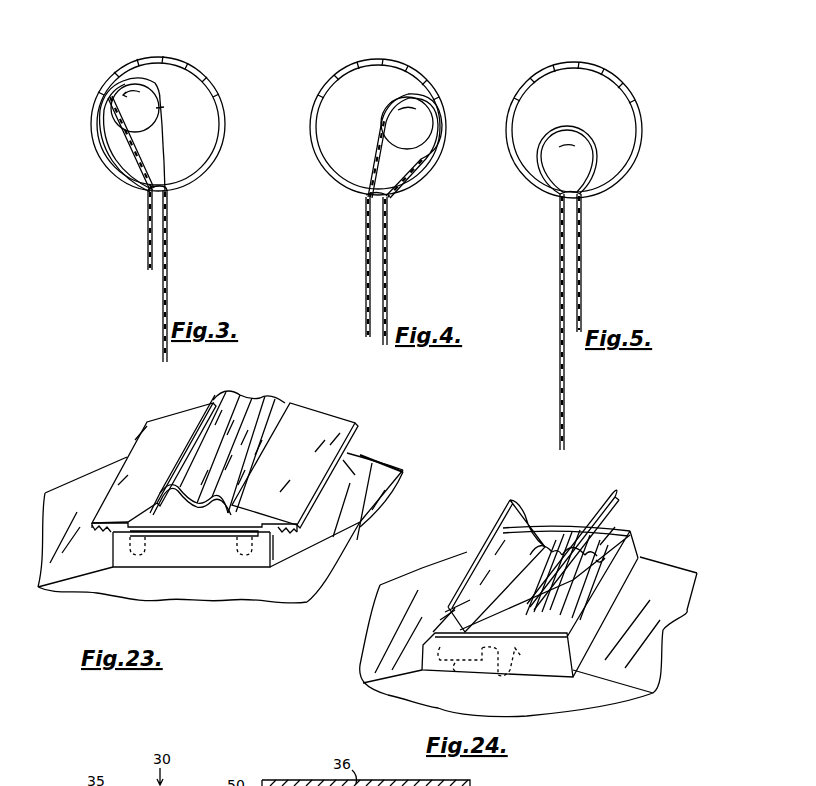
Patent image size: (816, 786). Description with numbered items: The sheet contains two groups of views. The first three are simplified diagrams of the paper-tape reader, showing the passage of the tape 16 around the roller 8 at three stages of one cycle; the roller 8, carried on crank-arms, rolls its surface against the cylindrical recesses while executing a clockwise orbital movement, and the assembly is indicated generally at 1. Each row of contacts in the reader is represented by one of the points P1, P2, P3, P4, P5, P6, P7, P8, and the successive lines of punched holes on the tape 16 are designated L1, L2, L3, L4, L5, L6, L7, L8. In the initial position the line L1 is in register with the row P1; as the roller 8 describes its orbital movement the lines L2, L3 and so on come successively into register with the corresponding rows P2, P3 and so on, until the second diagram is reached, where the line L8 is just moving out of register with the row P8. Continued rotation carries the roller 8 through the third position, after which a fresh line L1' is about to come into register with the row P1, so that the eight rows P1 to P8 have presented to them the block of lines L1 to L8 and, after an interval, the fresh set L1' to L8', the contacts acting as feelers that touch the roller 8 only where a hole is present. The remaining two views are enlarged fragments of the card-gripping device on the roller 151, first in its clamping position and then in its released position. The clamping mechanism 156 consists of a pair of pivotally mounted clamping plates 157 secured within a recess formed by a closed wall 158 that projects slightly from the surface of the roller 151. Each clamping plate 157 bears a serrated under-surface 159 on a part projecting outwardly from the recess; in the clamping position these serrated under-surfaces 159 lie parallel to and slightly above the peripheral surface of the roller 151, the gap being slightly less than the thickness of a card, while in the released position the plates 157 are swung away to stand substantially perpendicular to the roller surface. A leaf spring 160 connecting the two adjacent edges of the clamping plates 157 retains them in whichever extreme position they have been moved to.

In FIG. 3, the knot / stitch formation 1 is at (159, 26).
In FIG. 4, the knot / stitch formation 1 is at (388, 25).
In FIG. 5, the knot / stitch formation 1 is at (588, 25).
In FIG. 3, the roller 8 is at (138, 125).
In FIG. 4, the roller 8 is at (399, 135).
In FIG. 5, the roller 8 is at (580, 160).
In FIG. 3, the tape 16 is at (168, 292).
In FIG. 4, the tape 16 is at (388, 286).
In FIG. 5, the tape 16 is at (583, 259).
In FIG. 3, the row of contacts P1 is at (85, 88).
In FIG. 4, the row of contacts P1 is at (303, 90).
In FIG. 5, the row of contacts P1 is at (501, 92).
In FIG. 3, the row of contacts P2 is at (102, 67).
In FIG. 4, the row of contacts P2 is at (320, 68).
In FIG. 5, the row of contacts P2 is at (517, 70).
In FIG. 3, the row of contacts P3 is at (123, 53).
In FIG. 4, the row of contacts P3 is at (342, 55).
In FIG. 5, the row of contacts P3 is at (537, 54).
In FIG. 3, the row of contacts P4 is at (146, 43).
In FIG. 4, the row of contacts P4 is at (366, 47).
In FIG. 5, the row of contacts P4 is at (561, 50).
In FIG. 3, the row of contacts P5 is at (171, 42).
In FIG. 4, the row of contacts P5 is at (391, 45).
In FIG. 5, the row of contacts P5 is at (588, 50).
In FIG. 3, the row of contacts P6 is at (199, 52).
In FIG. 4, the row of contacts P6 is at (421, 58).
In FIG. 5, the row of contacts P6 is at (614, 60).
In FIG. 3, the row of contacts P7 is at (218, 70).
In FIG. 4, the row of contacts P7 is at (440, 73).
In FIG. 5, the row of contacts P7 is at (635, 77).
In FIG. 3, the row of contacts P8 is at (230, 88).
In FIG. 4, the row of contacts P8 is at (452, 93).
In FIG. 5, the row of contacts P8 is at (649, 97).
In FIG. 3, the line of punched holes L1 is at (104, 136).
In FIG. 4, the line of punched holes L1 is at (345, 266).
In FIG. 5, the line of punched holes L1 is at (544, 322).
In FIG. 3, the line of punched holes L2 is at (110, 104).
In FIG. 3, the line of punched holes L3 is at (143, 73).
In FIG. 3, the line of punched holes L4 is at (155, 88).
In FIG. 3, the line of punched holes L5 is at (158, 107).
In FIG. 3, the line of punched holes L6 is at (160, 123).
In FIG. 3, the line of punched holes L7 is at (162, 140).
In FIG. 4, the line of punched holes L7 is at (396, 98).
In FIG. 3, the line of punched holes L8 is at (179, 172).
In FIG. 4, the line of punched holes L8 is at (398, 97).
In FIG. 5, the line of punched holes L8 is at (535, 136).
In FIG. 4, the fresh line of punched holes L1' is at (427, 146).
In FIG. 5, the fresh line of punched holes L1' is at (603, 134).
In FIG. 4, the fresh line of punched holes L8' is at (417, 271).
In FIG. 5, the fresh line of punched holes L8' is at (614, 263).
In FIG. 23, the roller 151 is at (378, 467).
In FIG. 24, the roller 151 is at (367, 473).
In FIG. 23, the clamping mechanism 156 is at (267, 380).
In FIG. 24, the clamping mechanism 156 is at (603, 470).
In FIG. 23, the clamping plates 157 is at (160, 432).
In FIG. 24, the clamping plates 157 is at (513, 518).
In FIG. 23, the closed wall 158 is at (197, 532).
In FIG. 24, the closed wall 158 is at (633, 531).
In FIG. 23, the serrated under-surface 159 is at (107, 520).
In FIG. 24, the serrated under-surface 159 is at (437, 617).
In FIG. 23, the leaf spring 160 is at (230, 400).
In FIG. 24, the leaf spring 160 is at (553, 557).